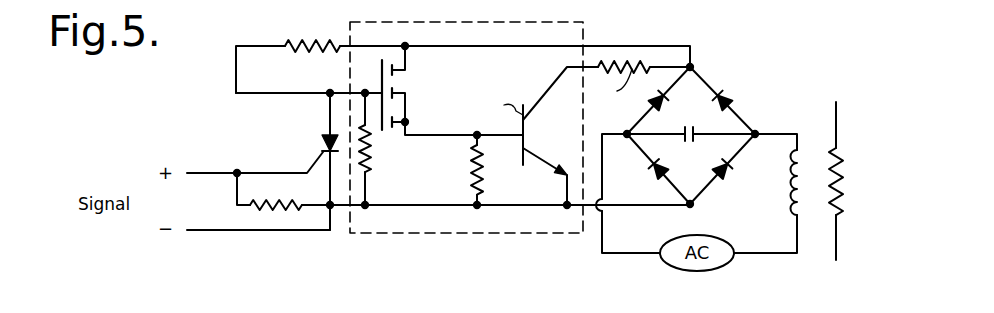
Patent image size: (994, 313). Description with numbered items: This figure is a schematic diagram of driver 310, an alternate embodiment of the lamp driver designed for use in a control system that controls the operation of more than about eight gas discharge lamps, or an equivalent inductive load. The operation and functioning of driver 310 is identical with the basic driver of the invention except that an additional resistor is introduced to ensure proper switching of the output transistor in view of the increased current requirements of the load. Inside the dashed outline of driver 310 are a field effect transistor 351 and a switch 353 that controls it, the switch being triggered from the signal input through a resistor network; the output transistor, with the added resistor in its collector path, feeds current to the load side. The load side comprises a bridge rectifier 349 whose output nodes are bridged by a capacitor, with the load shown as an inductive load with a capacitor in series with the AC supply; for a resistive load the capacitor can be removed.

The driver 310 is at (604, 37).
The bridge rectifier 349 is at (733, 109).
The field effect transistor 351 is at (397, 83).
The silicon controlled rectifier 353 is at (322, 142).